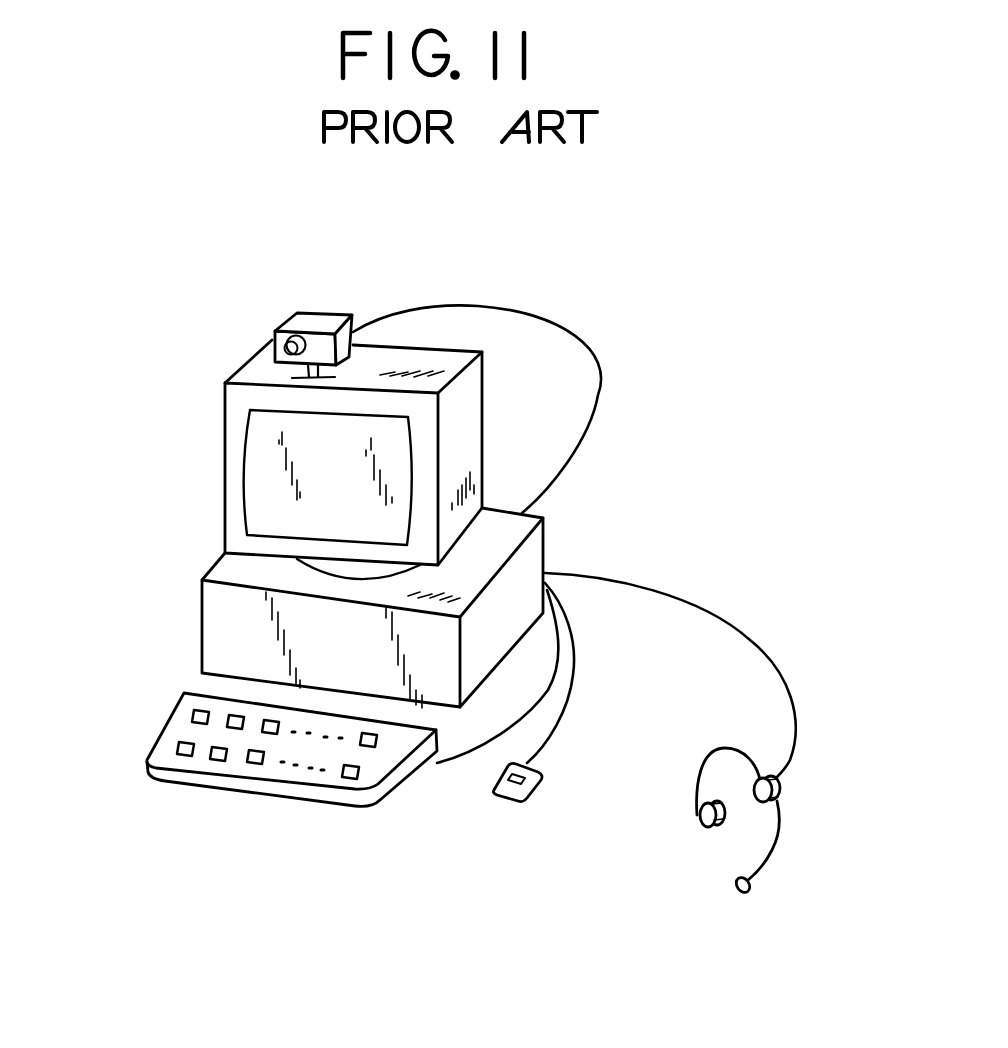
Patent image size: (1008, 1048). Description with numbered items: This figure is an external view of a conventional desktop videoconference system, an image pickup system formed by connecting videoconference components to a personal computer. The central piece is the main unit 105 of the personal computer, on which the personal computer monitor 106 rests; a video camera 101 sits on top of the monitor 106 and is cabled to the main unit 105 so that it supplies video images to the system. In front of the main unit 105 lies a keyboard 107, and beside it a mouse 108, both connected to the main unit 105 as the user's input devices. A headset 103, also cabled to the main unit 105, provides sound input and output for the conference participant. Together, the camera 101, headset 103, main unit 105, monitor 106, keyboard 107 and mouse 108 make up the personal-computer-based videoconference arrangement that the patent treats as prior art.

The video camera 101 is at (320, 322).
The headset 103 is at (778, 820).
The main unit of the personal computer 105 is at (535, 553).
The personal computer monitor 106 is at (235, 465).
The keyboard 107 is at (163, 730).
The mouse 108 is at (537, 777).